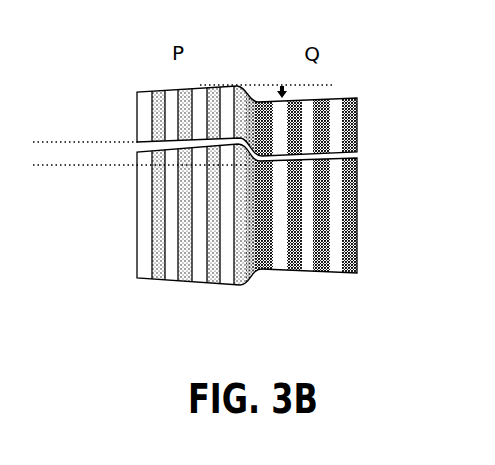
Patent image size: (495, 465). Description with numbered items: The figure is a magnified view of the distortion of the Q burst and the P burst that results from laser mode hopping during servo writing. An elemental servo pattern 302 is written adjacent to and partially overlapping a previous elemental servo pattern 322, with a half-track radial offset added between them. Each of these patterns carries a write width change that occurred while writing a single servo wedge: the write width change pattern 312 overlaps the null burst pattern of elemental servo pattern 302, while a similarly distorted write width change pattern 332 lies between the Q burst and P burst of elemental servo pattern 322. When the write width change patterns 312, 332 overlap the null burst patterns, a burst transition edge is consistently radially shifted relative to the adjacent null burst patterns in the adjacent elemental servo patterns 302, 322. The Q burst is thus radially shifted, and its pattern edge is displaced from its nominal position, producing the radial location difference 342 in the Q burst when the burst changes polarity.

The elemental servo pattern 302 is at (372, 218).
The write width change pattern 312 is at (258, 288).
The previous elemental servo pattern 322 is at (372, 130).
The write width change pattern 332 is at (258, 94).
The radial location difference 342 is at (87, 215).